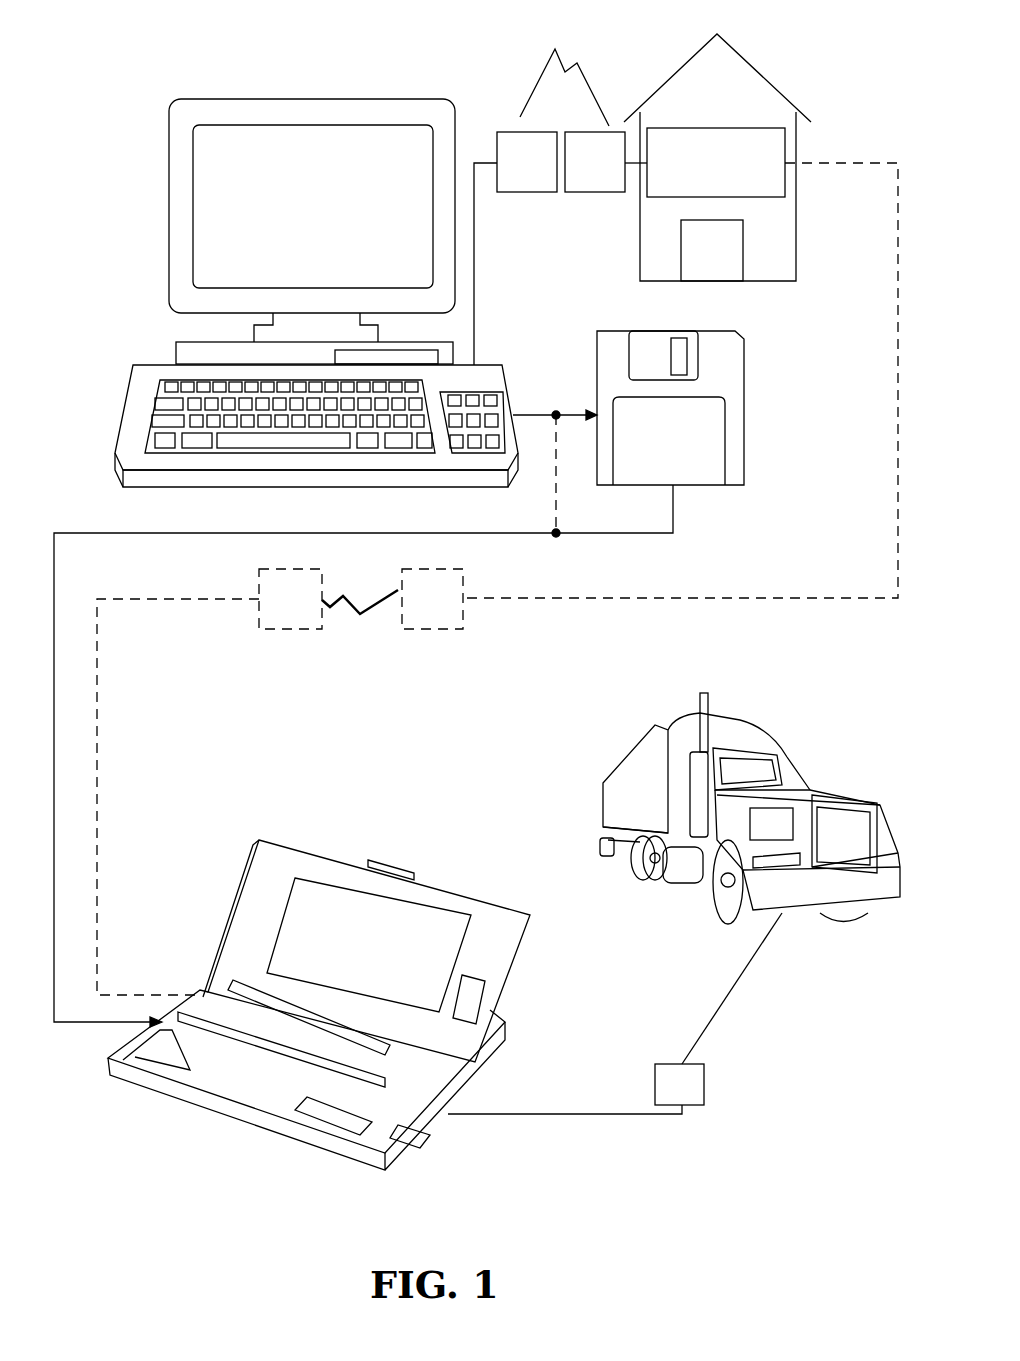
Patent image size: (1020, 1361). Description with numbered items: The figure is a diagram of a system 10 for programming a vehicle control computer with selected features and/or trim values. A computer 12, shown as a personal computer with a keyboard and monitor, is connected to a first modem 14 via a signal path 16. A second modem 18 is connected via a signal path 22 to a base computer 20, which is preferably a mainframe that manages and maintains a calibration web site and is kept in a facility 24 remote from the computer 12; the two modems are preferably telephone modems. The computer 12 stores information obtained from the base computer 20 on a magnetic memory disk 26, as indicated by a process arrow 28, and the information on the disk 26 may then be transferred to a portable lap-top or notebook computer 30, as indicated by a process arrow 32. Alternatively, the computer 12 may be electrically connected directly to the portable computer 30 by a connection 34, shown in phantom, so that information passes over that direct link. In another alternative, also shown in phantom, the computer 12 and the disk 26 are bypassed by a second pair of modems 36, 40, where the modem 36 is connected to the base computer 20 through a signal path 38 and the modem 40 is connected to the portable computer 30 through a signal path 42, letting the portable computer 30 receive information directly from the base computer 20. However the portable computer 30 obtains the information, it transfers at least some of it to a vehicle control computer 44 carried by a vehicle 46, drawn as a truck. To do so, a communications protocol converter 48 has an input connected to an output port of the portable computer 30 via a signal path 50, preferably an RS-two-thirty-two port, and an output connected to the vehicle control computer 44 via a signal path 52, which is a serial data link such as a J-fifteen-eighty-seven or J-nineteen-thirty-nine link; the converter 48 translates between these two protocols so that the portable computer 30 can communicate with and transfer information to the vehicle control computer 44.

The system 10 is at (112, 225).
The computer 12 is at (168, 153).
The first modem 14 is at (513, 192).
The signal path 16 is at (474, 283).
The second modem 18 is at (580, 192).
The base computer 20 is at (694, 128).
The signal path 22 is at (633, 165).
The facility 24 is at (757, 70).
The magnetic memory disk 26 is at (744, 362).
The process arrow 28 is at (533, 410).
The portable computer 30 is at (388, 862).
The process arrow 32 is at (54, 553).
The connection 34 is at (552, 485).
The modem 36 is at (443, 629).
The signal path 38 is at (737, 598).
The modem 40 is at (287, 629).
The signal path 42 is at (97, 736).
The vehicle control computer 44 is at (782, 913).
The vehicle 46 is at (853, 793).
The communications protocol converter 48 is at (704, 1084).
The signal path 50 is at (565, 1115).
The signal path 52 is at (740, 975).